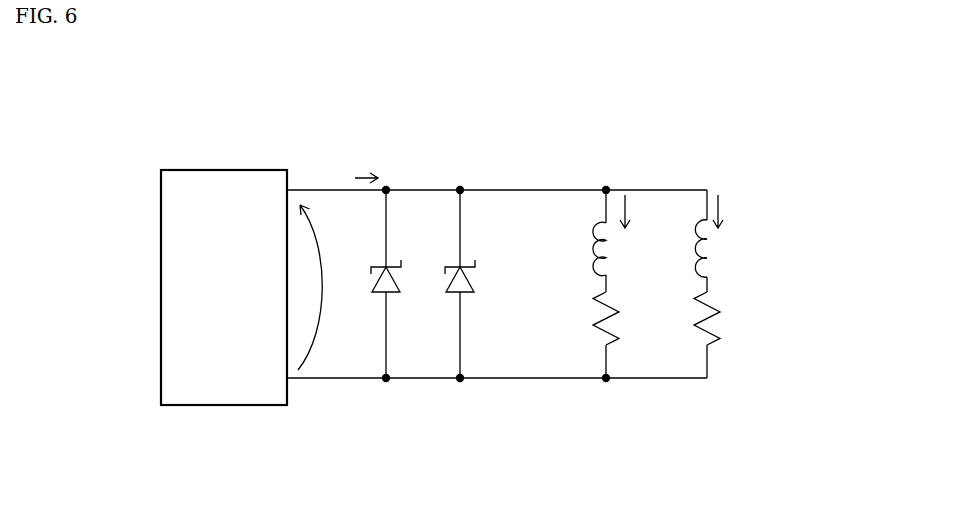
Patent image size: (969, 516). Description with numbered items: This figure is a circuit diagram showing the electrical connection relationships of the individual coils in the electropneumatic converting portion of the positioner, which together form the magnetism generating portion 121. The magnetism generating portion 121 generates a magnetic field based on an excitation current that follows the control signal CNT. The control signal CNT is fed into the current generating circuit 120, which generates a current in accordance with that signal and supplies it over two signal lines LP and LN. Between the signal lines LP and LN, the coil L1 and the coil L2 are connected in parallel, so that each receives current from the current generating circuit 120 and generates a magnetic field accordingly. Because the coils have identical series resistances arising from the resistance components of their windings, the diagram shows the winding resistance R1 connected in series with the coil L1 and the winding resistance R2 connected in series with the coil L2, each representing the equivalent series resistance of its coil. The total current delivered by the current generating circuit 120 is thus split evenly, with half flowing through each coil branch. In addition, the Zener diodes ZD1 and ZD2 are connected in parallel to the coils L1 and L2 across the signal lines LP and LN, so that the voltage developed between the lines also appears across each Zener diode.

The current generating circuit 120 is at (223, 170).
The magnetism generating portion 121 is at (586, 264).
The control signal CNT is at (150, 300).
The signal line LP is at (308, 189).
The signal line LN is at (320, 380).
The Zener diode ZD1 is at (401, 284).
The Zener diode ZD2 is at (476, 284).
The coil L1 is at (570, 248).
The coil L2 is at (729, 248).
The winding resistance R1 is at (577, 322).
The winding resistance R2 is at (730, 321).